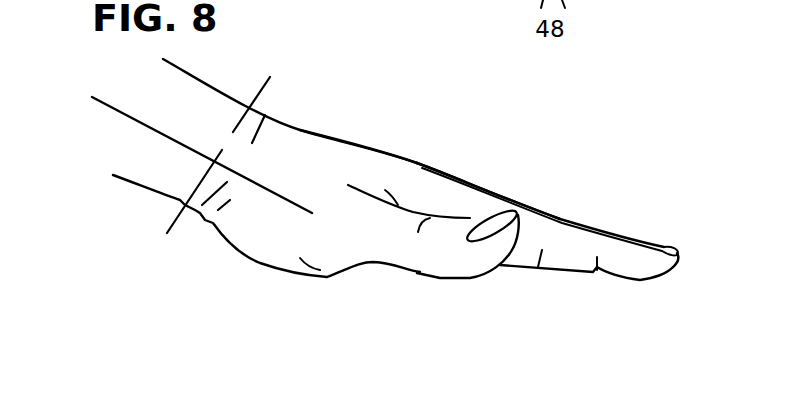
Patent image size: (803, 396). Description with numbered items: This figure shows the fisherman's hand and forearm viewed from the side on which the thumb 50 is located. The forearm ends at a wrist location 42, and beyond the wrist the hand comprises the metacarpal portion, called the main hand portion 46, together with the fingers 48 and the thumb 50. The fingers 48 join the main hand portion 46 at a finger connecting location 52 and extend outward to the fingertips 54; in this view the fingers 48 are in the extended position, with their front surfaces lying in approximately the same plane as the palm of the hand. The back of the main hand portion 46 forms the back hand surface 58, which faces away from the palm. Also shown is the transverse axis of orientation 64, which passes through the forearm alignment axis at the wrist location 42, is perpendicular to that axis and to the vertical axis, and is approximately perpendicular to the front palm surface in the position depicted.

The wrist location 42 is at (267, 118).
The main hand portion 46 is at (308, 155).
The fingers 48 is at (550, 212).
The thumb 50 is at (443, 235).
The finger connecting location 52 is at (417, 163).
The fingertips 54 is at (653, 245).
The back hand surface 58 is at (366, 145).
The transverse axis of orientation 64 is at (262, 79).